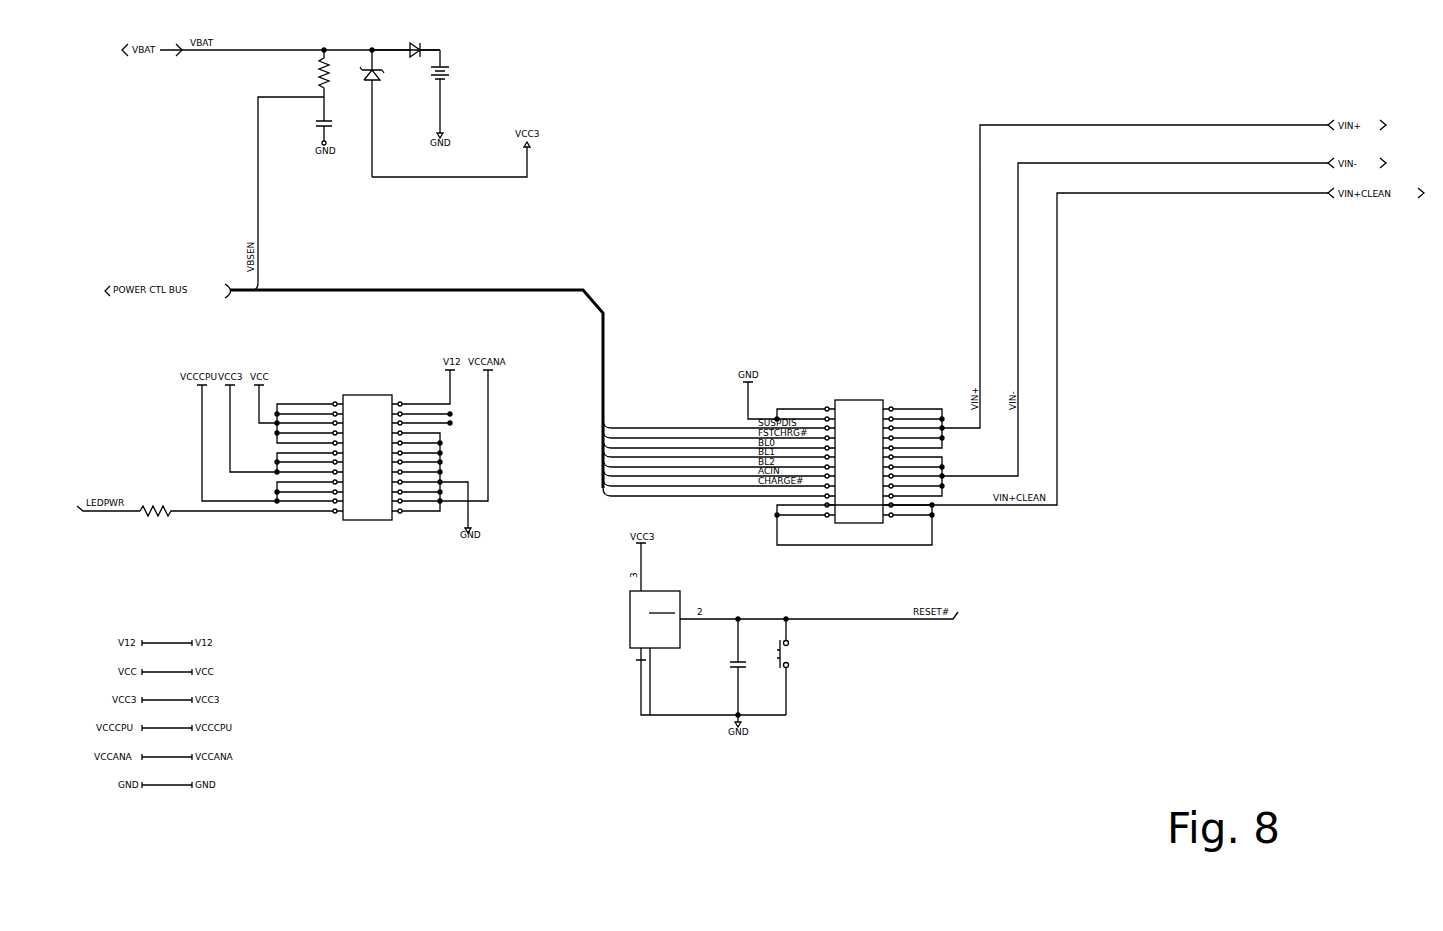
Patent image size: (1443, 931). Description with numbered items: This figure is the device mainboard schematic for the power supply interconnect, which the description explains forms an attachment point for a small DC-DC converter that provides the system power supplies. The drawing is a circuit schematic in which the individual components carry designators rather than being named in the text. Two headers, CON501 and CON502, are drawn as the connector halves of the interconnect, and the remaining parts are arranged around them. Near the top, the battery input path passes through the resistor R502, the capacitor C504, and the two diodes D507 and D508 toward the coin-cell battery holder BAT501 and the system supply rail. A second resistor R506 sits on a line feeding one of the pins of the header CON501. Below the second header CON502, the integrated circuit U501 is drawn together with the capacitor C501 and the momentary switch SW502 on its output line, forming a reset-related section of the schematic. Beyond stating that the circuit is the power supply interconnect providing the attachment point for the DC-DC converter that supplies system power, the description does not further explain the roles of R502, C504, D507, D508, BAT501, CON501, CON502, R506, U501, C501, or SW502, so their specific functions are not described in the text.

The resistor 2.2K R502 is at (319, 73).
The capacitor 0.1uF C504 is at (317, 122).
The Schottky diode BAT54 D507 is at (386, 113).
The Schottky diode BAT54 D508 is at (406, 49).
The 3V coin cell holder BAT501 is at (482, 94).
The header 12x2 connector CON501 is at (370, 458).
The header 12x2 connector CON502 is at (862, 462).
The resistor 1K R506 is at (236, 509).
The reset supervisor DS1233A U501 is at (677, 618).
The capacitor 0.1uF C501 is at (751, 667).
The momentary reset switch SW502 is at (811, 667).